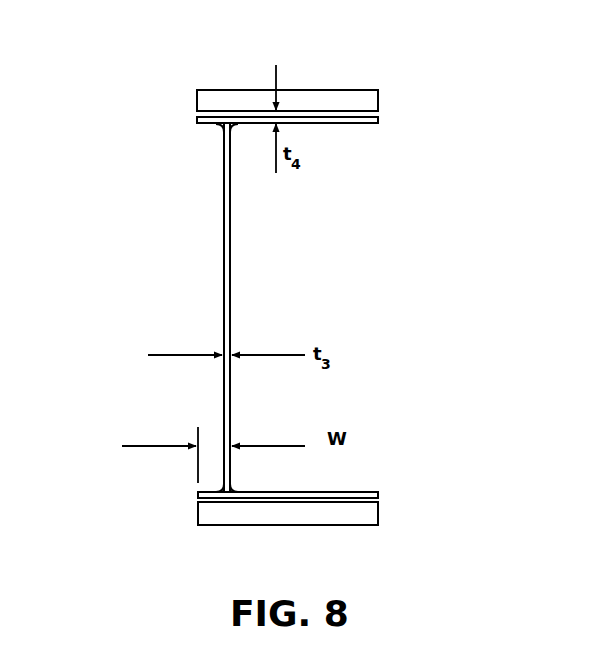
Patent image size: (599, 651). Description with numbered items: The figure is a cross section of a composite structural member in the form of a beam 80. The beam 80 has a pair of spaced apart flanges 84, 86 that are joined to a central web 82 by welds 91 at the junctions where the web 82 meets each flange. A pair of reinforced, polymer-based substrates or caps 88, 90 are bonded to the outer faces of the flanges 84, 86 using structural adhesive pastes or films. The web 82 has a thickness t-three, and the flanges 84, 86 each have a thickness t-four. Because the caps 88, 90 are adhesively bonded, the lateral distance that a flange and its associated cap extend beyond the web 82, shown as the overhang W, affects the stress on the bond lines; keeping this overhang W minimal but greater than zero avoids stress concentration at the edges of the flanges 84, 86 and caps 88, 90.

The beam 80 is at (146, 246).
The web 82 is at (232, 287).
The flange 84 is at (352, 124).
The flange 86 is at (370, 491).
The cap 88 is at (350, 103).
The cap 90 is at (365, 512).
The weld 91 is at (217, 128).